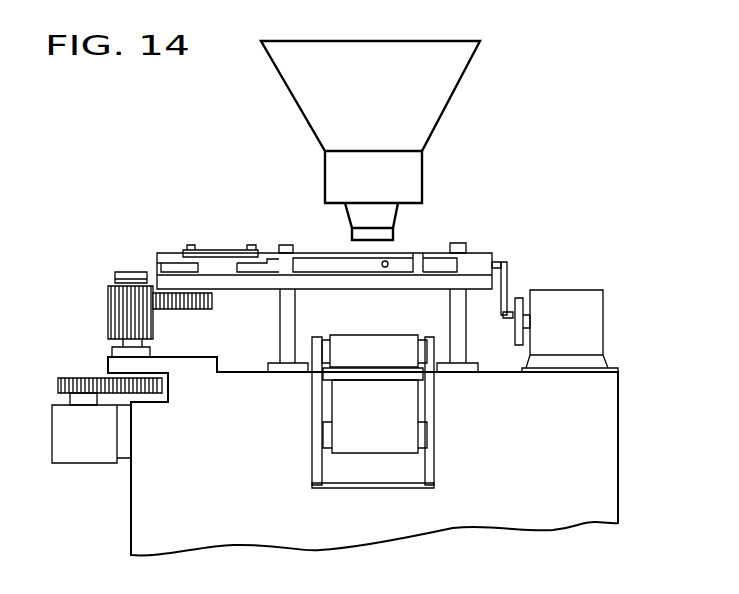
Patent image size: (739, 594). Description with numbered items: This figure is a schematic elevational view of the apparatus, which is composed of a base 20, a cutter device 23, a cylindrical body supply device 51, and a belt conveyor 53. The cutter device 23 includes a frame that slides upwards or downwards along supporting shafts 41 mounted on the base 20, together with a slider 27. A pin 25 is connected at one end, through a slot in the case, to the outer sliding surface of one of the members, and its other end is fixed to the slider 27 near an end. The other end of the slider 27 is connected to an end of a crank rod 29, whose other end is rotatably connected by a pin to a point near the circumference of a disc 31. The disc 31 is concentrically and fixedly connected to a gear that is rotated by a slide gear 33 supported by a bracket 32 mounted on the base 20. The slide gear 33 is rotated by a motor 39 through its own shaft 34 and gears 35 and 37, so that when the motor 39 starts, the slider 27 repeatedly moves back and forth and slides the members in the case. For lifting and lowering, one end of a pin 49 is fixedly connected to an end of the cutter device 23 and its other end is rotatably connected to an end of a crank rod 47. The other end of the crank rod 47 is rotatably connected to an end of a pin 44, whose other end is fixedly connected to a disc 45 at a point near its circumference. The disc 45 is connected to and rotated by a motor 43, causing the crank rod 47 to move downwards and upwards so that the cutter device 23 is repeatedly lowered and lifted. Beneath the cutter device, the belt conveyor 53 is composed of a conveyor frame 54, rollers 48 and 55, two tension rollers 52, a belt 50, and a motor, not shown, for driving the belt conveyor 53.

The base 20 is at (619, 448).
The cutter device 23 is at (472, 229).
The pin 25 is at (385, 268).
The slider 27 is at (329, 262).
The crank rod 29 is at (233, 250).
The disc 31 is at (170, 263).
The bracket 32 is at (128, 272).
The slide gear 33 is at (171, 320).
The shaft 34 is at (135, 375).
The gear 35 is at (110, 378).
The gear 37 is at (58, 385).
The motor 39 is at (80, 445).
The supporting shafts 41 is at (283, 333).
The motor 43 is at (601, 310).
The pin 44 is at (509, 316).
The disc 45 is at (519, 306).
The crank rod 47 is at (506, 285).
The roller 48 is at (423, 476).
The pin 49 is at (495, 261).
The belt 50 is at (395, 348).
The cylindrical body supply device 51 is at (447, 167).
The tension rollers 52 is at (382, 382).
The belt conveyor 53 is at (284, 459).
The conveyor frame 54 is at (315, 478).
The roller 55 is at (326, 340).